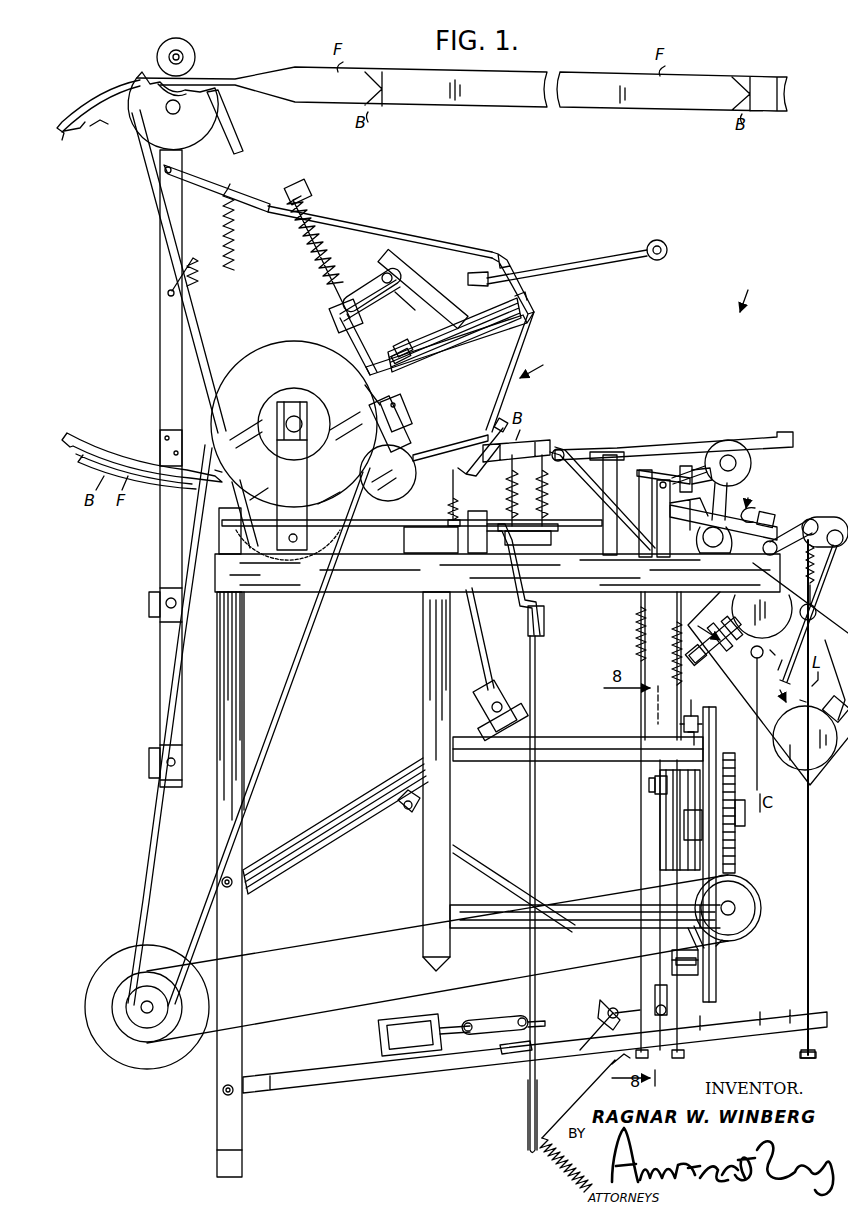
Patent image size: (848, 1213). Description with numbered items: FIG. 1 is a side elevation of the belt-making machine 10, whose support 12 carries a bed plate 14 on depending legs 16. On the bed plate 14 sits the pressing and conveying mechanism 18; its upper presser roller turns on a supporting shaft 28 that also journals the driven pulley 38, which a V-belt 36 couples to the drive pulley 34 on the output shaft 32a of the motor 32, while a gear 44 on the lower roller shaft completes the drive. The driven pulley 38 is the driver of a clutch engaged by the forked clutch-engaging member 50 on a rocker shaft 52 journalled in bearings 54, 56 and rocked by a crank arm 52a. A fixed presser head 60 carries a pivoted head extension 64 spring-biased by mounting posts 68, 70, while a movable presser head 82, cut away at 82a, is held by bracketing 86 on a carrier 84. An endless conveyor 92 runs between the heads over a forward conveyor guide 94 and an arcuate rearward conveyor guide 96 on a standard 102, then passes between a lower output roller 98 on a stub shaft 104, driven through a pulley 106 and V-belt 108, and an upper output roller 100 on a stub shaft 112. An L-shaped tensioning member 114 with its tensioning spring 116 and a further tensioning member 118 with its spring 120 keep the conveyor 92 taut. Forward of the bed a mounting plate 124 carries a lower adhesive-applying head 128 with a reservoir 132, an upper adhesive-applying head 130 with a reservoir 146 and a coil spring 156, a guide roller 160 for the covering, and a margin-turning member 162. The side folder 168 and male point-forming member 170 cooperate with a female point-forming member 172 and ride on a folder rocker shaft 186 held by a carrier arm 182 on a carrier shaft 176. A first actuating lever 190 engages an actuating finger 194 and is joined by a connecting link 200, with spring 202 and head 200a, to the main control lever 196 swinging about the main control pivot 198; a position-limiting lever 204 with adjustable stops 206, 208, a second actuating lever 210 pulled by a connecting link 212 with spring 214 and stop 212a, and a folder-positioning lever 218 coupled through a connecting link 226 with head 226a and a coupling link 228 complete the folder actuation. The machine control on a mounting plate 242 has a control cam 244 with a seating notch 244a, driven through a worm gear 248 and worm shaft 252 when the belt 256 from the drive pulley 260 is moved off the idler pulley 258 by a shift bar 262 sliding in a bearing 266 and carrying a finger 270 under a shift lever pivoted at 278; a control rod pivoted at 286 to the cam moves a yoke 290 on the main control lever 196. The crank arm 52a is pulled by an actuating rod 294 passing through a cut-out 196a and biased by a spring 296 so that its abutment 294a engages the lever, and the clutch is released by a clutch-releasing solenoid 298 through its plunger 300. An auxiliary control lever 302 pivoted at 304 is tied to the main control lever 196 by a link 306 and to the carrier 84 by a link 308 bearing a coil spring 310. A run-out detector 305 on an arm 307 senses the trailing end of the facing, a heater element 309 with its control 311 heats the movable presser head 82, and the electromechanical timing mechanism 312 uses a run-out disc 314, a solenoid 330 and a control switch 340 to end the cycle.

The backing and belt making machine 10 is at (754, 288).
The support 12 is at (215, 1158).
The bed plate 14 is at (410, 602).
The depending legs 16 is at (243, 913).
The pressing and conveying mechanism 18 is at (542, 359).
The supporting shaft 28 is at (286, 412).
The motor 32 is at (102, 978).
The output shaft 32a is at (144, 1008).
The drive pulley 34 is at (140, 1018).
The V-belt 36 is at (145, 890).
The driven pulley 38 is at (222, 386).
The gear 44 is at (278, 580).
The clutch-engaging member 50 is at (286, 468).
The rocker shaft 52 is at (318, 510).
The crank arm 52a is at (500, 588).
The bearing 54 is at (225, 555).
The bearing 56 is at (478, 558).
The fixed presser head 60 is at (455, 452).
The head extension 64 is at (528, 440).
The mounting post 68 is at (512, 466).
The mounting post 70 is at (545, 500).
The movable presser head 82 is at (498, 350).
The cut-away 82a is at (468, 362).
The carrier 84 is at (372, 290).
The bracketing 86 is at (420, 285).
The endless conveyor 92 is at (430, 240).
The forward conveyor guide 94 is at (522, 306).
The rearward conveyor guide 96 is at (103, 127).
The lower output roller 98 is at (172, 104).
The upper output roller 100 is at (195, 55).
The standard 102 is at (160, 337).
The stub shaft 104 is at (171, 114).
The pulley 106 is at (150, 132).
The V-belt 108 is at (240, 140).
The stub shaft 112 is at (157, 57).
The tensioning member 114 is at (470, 445).
The tensioning spring 116 is at (460, 470).
The further tensioning member 118 is at (250, 200).
The spring 120 is at (205, 243).
The mounting plate 124 is at (835, 640).
The lower adhesive-applying head 128 is at (789, 681).
The upper adhesive-applying head 130 is at (703, 623).
The reservoir 132 is at (806, 740).
The reservoir 146 is at (766, 600).
The coil spring 156 is at (712, 650).
The guide roller 160 is at (756, 660).
The margin-turning member 162 is at (558, 461).
The side folder 168 is at (762, 438).
The male point-forming member 170 is at (612, 450).
The female point-forming member 172 is at (583, 440).
The carrier shaft 176 is at (713, 548).
The carrier arm 182 is at (716, 440).
The folder rocker shaft 186 is at (734, 454).
The first actuating lever 190 is at (650, 462).
The actuating finger 194 is at (690, 448).
The main control lever 196 is at (305, 1090).
The cut-out 196a is at (516, 1054).
The main control pivot 198 is at (222, 1090).
The connecting link 200 is at (640, 715).
The head 200a is at (650, 1060).
The spring 202 is at (636, 640).
The position-limiting lever 204 is at (703, 555).
The adjustable stop 206 is at (675, 506).
The adjustable stop 208 is at (772, 512).
The second actuating lever 210 is at (831, 524).
The connecting link 212 is at (680, 705).
The stop 212a is at (682, 1056).
The spring 214 is at (674, 650).
The folder-positioning lever 218 is at (760, 500).
The connecting link 226 is at (809, 870).
The head 226a is at (802, 1057).
The coupling link 228 is at (825, 562).
The mounting plate 242 is at (713, 760).
The control cam 244 is at (670, 796).
The seating notch 244a is at (684, 822).
The worm gear 248 is at (738, 832).
The worm shaft 252 is at (735, 908).
The belt 256 is at (280, 1020).
The idler pulley 258 is at (748, 930).
The drive pulley 260 is at (150, 1035).
The shift bar 262 is at (684, 972).
The bearing 266 is at (700, 952).
The finger 270 is at (700, 960).
The pivot 278 is at (700, 712).
The pivotal connection 286 is at (652, 784).
The yoke 290 is at (652, 997).
The actuating rod 294 is at (530, 808).
The abutment 294a is at (528, 1088).
The spring 296 is at (540, 1125).
The clutch-releasing solenoid 298 is at (392, 1036).
The plunger 300 is at (455, 1045).
The auxiliary control lever 302 is at (296, 836).
The pivot 304 is at (221, 882).
The run-out detector 305 is at (668, 250).
The link 306 is at (470, 870).
The arm 307 is at (618, 254).
The link 308 is at (482, 652).
The heater element 309 is at (396, 351).
The coil spring 310 is at (306, 214).
The control 311 is at (404, 338).
The electromechanical timing mechanism 312 is at (380, 446).
The run-out disc 314 is at (388, 473).
The solenoid 330 is at (452, 545).
The control switch 340 is at (393, 406).